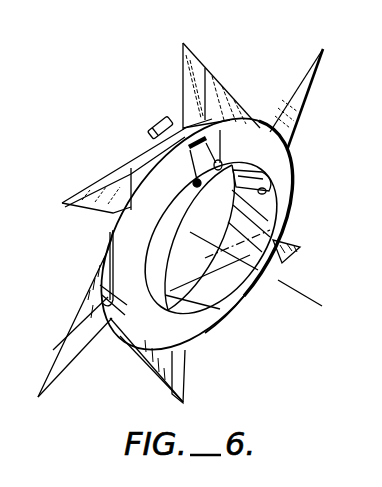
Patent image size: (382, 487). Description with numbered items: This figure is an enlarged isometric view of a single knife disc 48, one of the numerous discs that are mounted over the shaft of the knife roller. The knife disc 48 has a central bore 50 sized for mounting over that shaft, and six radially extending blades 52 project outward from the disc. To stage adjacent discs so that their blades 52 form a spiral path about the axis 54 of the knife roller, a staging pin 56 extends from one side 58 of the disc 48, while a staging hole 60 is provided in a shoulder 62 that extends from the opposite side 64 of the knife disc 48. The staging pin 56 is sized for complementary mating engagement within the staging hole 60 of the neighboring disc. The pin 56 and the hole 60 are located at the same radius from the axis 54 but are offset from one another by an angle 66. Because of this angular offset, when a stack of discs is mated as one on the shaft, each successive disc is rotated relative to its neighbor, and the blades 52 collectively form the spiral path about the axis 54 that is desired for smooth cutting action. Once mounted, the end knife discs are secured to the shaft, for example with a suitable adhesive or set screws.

The knife disc 48 is at (292, 149).
The central bore 50 is at (266, 195).
The blades 52 is at (183, 82).
The axis 54 is at (283, 236).
The staging pin 56 is at (150, 126).
The one side 58 is at (110, 223).
The staging hole 60 is at (258, 132).
The shoulder 62 is at (115, 326).
The opposite side 64 is at (242, 298).
The angle 66 is at (190, 147).